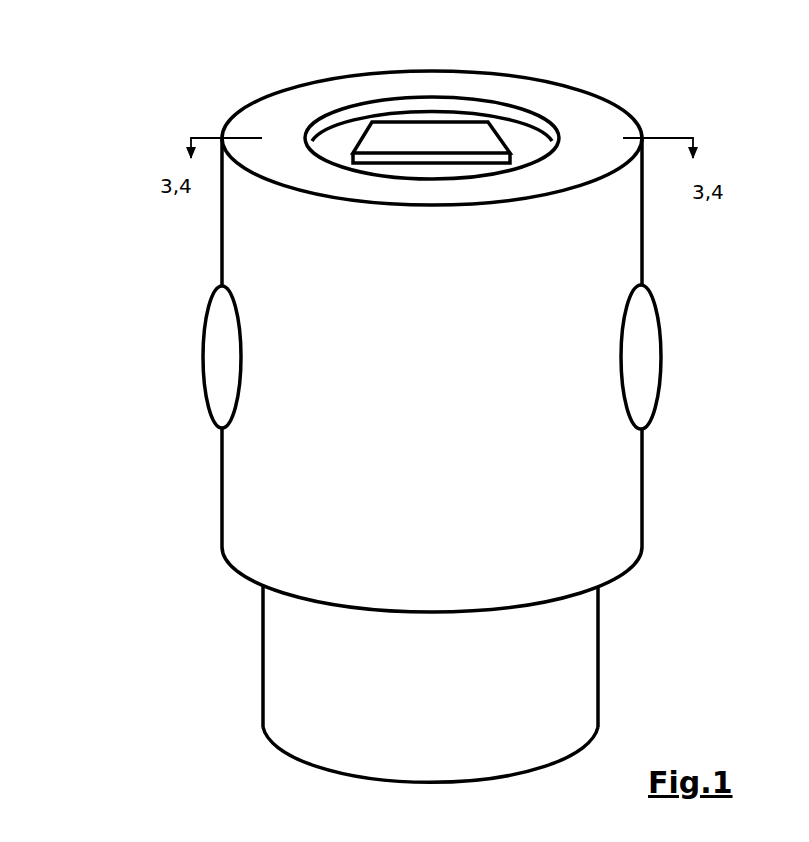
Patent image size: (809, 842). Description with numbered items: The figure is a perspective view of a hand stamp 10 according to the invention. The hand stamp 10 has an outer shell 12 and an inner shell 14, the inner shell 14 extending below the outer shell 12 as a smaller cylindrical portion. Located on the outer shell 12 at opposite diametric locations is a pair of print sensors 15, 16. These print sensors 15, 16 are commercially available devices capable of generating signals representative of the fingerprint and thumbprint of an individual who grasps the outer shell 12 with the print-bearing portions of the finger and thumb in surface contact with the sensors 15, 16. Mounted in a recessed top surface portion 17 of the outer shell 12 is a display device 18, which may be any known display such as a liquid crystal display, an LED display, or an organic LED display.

The hand stamp 10 is at (642, 97).
The outer shell 12 is at (616, 262).
The inner shell 14 is at (558, 703).
The print sensor 15 is at (215, 347).
The print sensor 16 is at (643, 345).
The recessed top surface portion 17 is at (333, 138).
The display device 18 is at (430, 138).